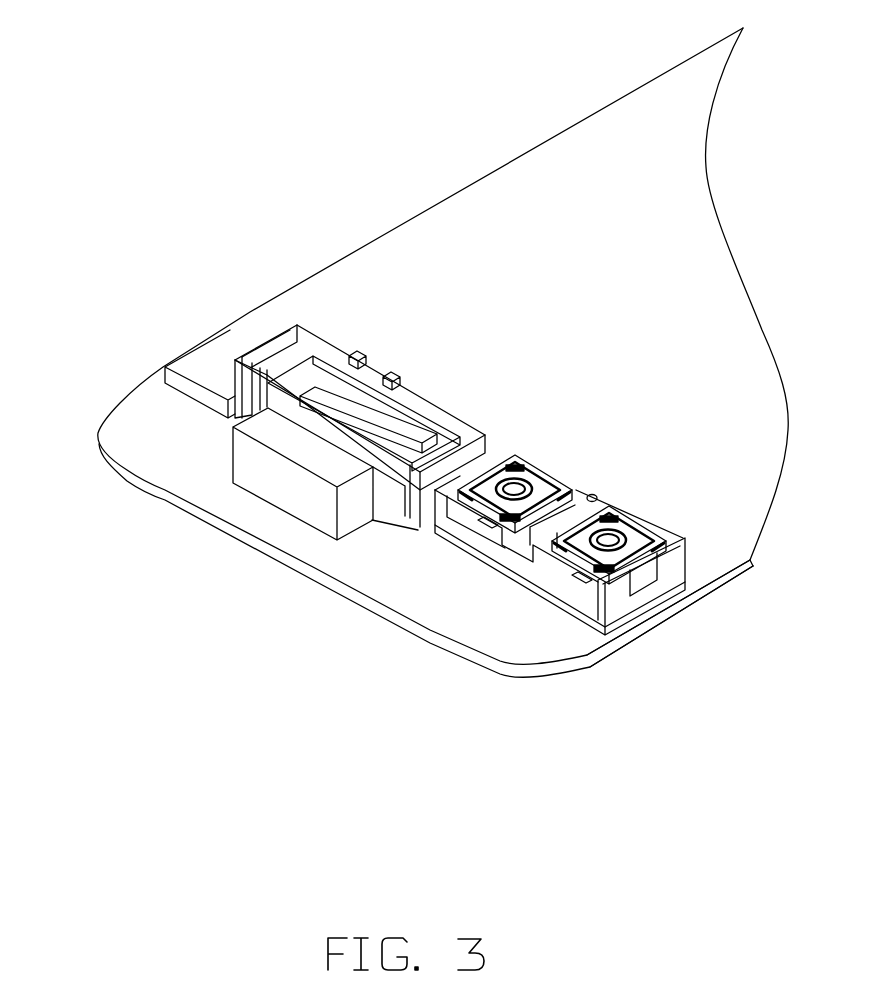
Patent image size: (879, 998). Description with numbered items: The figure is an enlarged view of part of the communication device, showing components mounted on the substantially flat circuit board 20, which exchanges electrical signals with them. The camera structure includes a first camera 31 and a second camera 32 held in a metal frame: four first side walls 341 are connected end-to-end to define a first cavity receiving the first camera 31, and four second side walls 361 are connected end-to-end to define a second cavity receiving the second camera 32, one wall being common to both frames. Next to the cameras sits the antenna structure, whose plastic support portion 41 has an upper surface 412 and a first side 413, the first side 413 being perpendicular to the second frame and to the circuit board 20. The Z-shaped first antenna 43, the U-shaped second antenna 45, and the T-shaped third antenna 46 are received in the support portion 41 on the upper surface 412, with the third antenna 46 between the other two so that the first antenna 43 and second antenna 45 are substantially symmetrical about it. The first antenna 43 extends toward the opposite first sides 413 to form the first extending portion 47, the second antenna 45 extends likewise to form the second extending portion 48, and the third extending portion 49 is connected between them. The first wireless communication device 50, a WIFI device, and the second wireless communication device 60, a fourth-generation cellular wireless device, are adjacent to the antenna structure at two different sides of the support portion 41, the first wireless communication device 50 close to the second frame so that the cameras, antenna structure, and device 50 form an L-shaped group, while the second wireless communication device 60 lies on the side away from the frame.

The circuit board 20 is at (543, 168).
The first camera 31 is at (647, 530).
The second camera 32 is at (510, 457).
The first side walls 341 is at (620, 607).
The second side walls 361 is at (465, 443).
The support portion 41 is at (564, 601).
The upper surface 412 is at (283, 342).
The first side 413 is at (233, 387).
The first antenna 43 is at (200, 361).
The second antenna 45 is at (388, 492).
The third antenna 46 is at (345, 397).
The first extending portion 47 is at (232, 398).
The second extending portion 48 is at (406, 472).
The third extending portion 49 is at (388, 478).
The first wireless communication device 50 is at (312, 504).
The second wireless communication device 60 is at (192, 362).